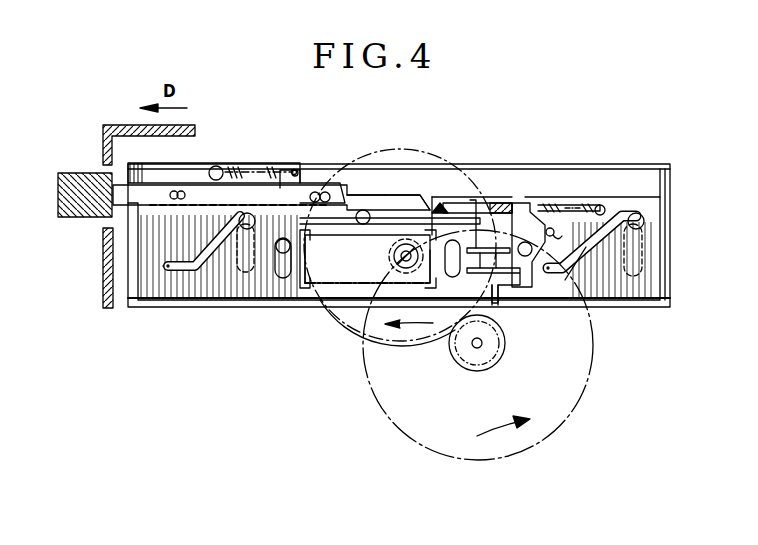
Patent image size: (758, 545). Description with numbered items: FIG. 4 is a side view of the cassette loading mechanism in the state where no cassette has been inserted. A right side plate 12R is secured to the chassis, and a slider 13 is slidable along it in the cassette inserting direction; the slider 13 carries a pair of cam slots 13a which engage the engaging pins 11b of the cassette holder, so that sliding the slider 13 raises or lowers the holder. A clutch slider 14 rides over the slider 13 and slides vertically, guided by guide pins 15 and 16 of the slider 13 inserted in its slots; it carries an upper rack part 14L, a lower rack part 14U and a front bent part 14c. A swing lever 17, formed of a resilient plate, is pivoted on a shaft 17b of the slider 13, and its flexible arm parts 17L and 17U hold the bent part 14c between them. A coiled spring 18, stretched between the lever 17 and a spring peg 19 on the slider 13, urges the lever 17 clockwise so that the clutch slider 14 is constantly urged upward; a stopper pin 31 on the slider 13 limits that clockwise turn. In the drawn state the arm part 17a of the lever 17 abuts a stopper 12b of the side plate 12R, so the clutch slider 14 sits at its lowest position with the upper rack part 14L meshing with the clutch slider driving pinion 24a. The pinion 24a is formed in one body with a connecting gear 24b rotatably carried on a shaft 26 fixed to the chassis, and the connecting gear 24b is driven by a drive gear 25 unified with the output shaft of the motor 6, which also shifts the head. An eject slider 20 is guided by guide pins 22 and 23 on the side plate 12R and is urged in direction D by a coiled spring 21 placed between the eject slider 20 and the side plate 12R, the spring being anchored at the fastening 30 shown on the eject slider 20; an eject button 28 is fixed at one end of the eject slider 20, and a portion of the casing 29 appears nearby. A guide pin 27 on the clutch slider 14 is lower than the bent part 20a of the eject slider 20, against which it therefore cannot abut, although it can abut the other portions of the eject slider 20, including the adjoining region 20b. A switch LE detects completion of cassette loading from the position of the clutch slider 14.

The head-moving and cassette-loading motor 6 is at (405, 420).
The engaging pins 11b is at (240, 224).
The right side plate 12R is at (652, 183).
The stopper 12b is at (507, 310).
The slider 13 is at (193, 290).
The cam slots 13a is at (173, 270).
The clutch slider 14 is at (287, 288).
The upper rack part 14L is at (337, 232).
The lower rack part 14U is at (323, 293).
The front bent part 14c is at (456, 260).
The guide pin 15 is at (272, 262).
The guide pin 16 is at (445, 208).
The swing lever 17 is at (528, 212).
The flexible arm part 17L is at (525, 242).
The flexible arm part 17U is at (492, 342).
The arm part 17a is at (497, 298).
The shaft 17b is at (545, 212).
The coiled spring 18 is at (575, 205).
The spring peg 19 is at (600, 205).
The eject slider 20 is at (122, 188).
The bent part 20a is at (373, 197).
The slide bar end 20b is at (413, 198).
The coiled spring 21 is at (250, 168).
The guide pin 22 is at (185, 193).
The guide pin 23 is at (327, 192).
The clutch slider driving pinion 24a is at (448, 205).
The connecting gear 24b is at (357, 320).
The drive gear 25 is at (467, 357).
The shaft 26 is at (390, 248).
The guide pin 27 is at (363, 210).
The eject button 28 is at (73, 210).
The casing 29 is at (102, 148).
The fastener 30 is at (218, 166).
The stopper pin 31 is at (564, 233).
The switch LE is at (505, 200).